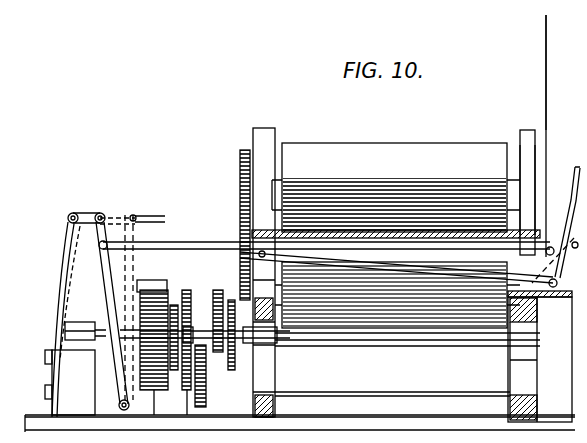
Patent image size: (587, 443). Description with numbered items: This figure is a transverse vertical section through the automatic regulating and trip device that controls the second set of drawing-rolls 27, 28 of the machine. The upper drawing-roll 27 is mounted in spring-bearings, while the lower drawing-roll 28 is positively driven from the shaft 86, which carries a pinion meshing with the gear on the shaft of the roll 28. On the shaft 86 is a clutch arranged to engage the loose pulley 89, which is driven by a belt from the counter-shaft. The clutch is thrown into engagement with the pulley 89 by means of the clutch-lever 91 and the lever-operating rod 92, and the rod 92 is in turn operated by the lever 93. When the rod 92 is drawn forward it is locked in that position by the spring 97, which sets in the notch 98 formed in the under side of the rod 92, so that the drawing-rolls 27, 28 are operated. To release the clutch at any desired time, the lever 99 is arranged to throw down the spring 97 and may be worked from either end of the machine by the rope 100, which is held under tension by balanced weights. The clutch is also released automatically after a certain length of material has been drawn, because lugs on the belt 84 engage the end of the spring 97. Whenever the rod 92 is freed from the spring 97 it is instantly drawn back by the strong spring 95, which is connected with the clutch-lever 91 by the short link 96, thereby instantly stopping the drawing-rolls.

The rope 100 is at (546, 78).
The upper drawing-roll 27 is at (396, 187).
The lower drawing-roll 28 is at (397, 295).
The lever-operating rod 92 is at (232, 230).
The shaft 86 is at (484, 340).
The notch 98 is at (213, 240).
The lever 99 is at (436, 262).
The lever 93 is at (573, 181).
The short link 96 is at (100, 202).
The strong spring 95 is at (61, 302).
The spring 97 is at (185, 240).
The clutch-lever 91 is at (58, 313).
The loose pulley 89 is at (150, 300).
The belt 84 is at (250, 376).